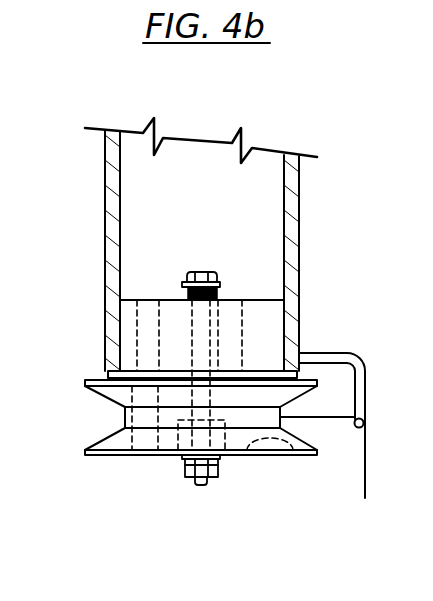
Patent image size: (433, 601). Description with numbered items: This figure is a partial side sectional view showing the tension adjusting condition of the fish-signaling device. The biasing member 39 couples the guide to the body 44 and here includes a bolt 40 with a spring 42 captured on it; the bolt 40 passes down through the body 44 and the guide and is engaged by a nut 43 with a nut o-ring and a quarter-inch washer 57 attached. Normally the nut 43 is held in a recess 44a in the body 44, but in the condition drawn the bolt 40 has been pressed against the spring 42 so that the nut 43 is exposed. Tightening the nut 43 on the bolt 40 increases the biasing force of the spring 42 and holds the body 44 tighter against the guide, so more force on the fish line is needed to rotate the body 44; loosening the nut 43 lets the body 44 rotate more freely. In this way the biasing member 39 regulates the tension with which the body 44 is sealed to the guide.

The biasing member 39 is at (187, 290).
The spring 42 is at (218, 296).
The body 44 is at (107, 397).
The recess 44a is at (177, 433).
The washer 57 is at (187, 463).
The bolt 40 is at (217, 460).
The nut 43 is at (215, 477).